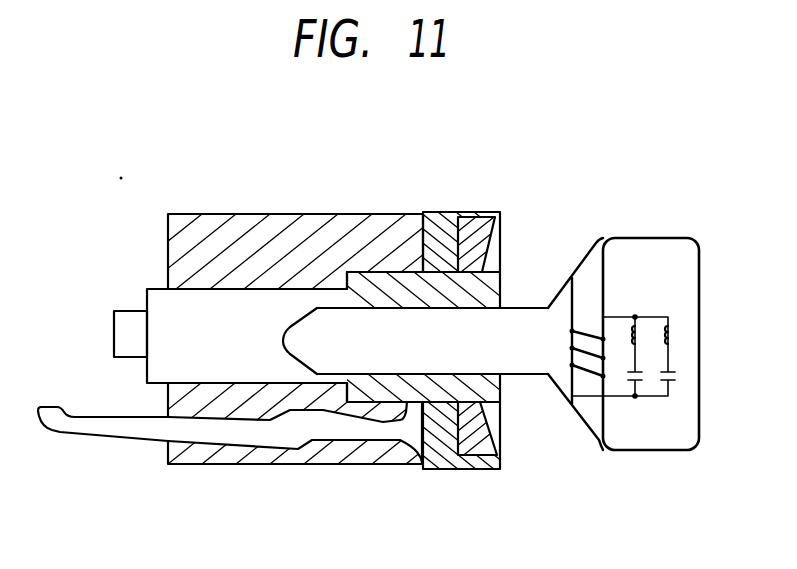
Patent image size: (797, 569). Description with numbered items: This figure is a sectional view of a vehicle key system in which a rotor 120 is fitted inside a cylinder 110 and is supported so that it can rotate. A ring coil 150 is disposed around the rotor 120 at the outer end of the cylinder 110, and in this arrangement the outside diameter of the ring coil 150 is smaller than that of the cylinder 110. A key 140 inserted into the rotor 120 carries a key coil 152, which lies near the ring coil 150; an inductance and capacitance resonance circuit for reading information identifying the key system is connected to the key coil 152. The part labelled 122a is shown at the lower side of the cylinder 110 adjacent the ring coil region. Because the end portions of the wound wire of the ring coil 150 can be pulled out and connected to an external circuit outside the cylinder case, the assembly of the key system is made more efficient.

The cylinder 110 is at (268, 211).
The rotor 120 is at (503, 266).
The ring coil 150 is at (466, 210).
The lower insulator block 122a is at (442, 463).
The key coil 152 is at (590, 273).
The key 140 is at (669, 235).